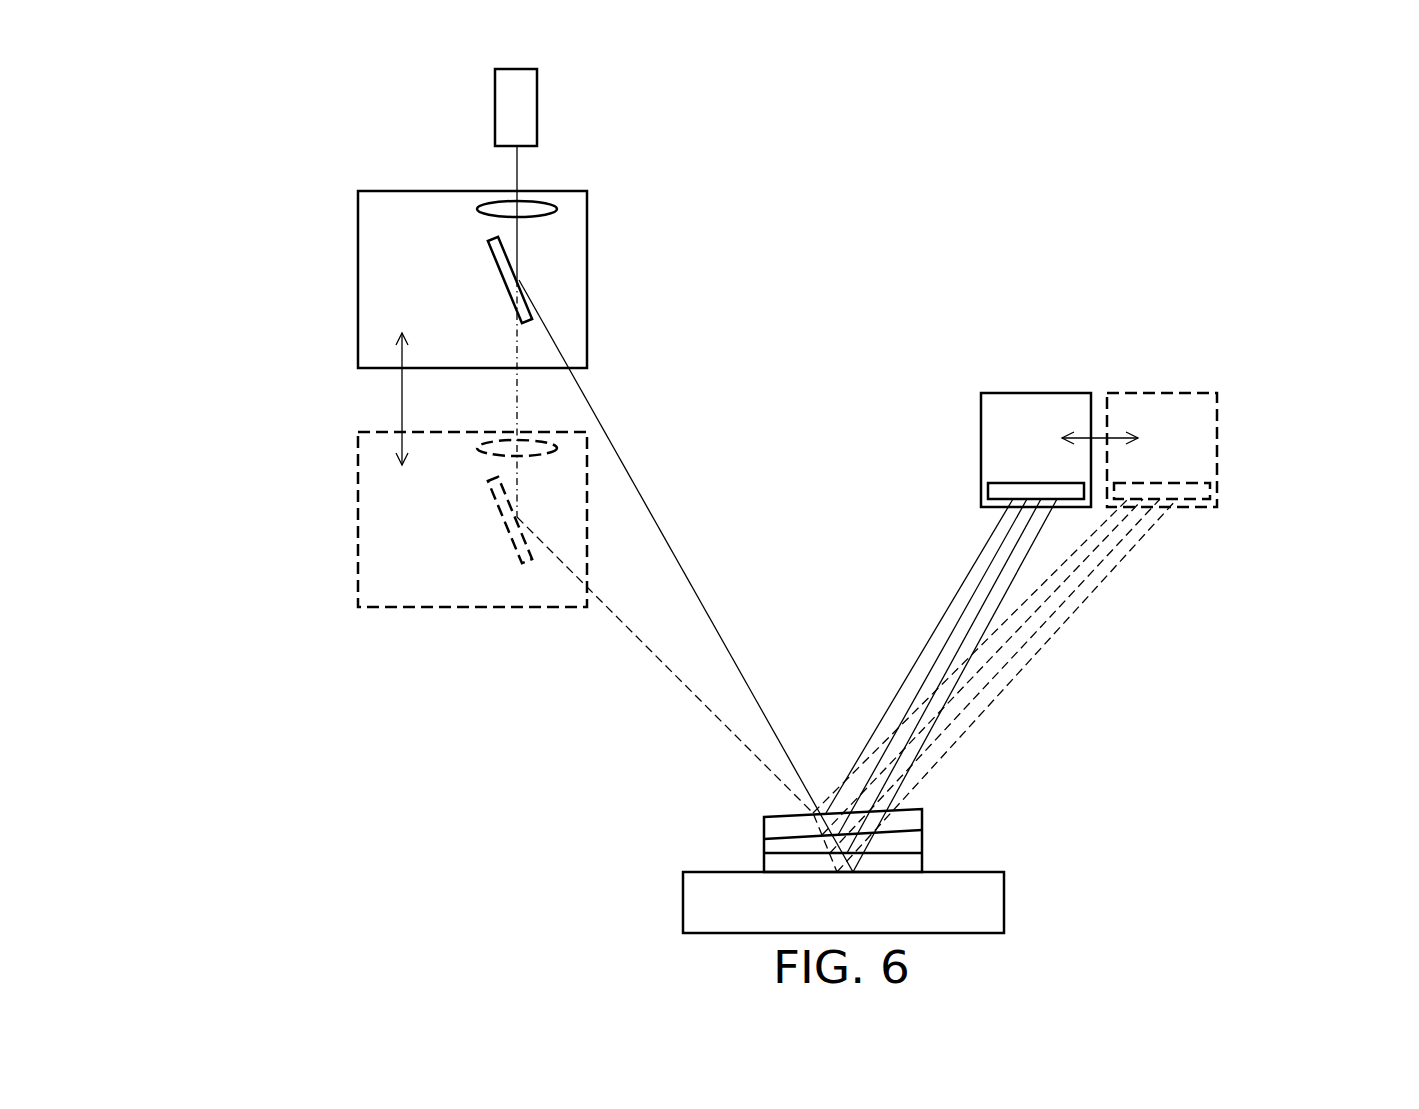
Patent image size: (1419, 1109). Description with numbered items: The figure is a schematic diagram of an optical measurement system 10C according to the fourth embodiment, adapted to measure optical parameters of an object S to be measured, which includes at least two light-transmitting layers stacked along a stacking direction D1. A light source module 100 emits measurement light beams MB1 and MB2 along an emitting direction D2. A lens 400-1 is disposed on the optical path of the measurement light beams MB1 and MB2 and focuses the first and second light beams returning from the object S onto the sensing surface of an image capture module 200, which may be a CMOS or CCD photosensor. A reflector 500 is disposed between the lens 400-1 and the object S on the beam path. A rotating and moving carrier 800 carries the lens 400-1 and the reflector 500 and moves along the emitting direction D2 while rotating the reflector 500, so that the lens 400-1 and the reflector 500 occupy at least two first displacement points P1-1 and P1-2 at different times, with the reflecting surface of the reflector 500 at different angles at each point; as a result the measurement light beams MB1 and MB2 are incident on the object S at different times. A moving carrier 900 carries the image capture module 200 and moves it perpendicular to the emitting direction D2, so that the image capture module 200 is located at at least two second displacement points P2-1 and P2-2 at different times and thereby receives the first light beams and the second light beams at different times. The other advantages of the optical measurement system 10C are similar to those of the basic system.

The light source module 100 is at (531, 112).
The lens 400-1 is at (487, 217).
The reflector 500 is at (497, 272).
The rotating and moving carrier 800 is at (358, 278).
The moving carrier 900 is at (1036, 392).
The image capture module 200 is at (988, 492).
The first displacement point P1-1 is at (397, 277).
The first displacement point P1-2 is at (337, 432).
The second displacement point P2-1 is at (984, 452).
The second displacement point P2-2 is at (1217, 517).
The measurement light beam MB1 is at (722, 637).
The measurement light beam MB2 is at (680, 683).
The stacking direction D1 is at (543, 860).
The emitting direction D2 is at (394, 75).
The object to be measured S is at (932, 823).
The optical measurement system 10C is at (1243, 932).